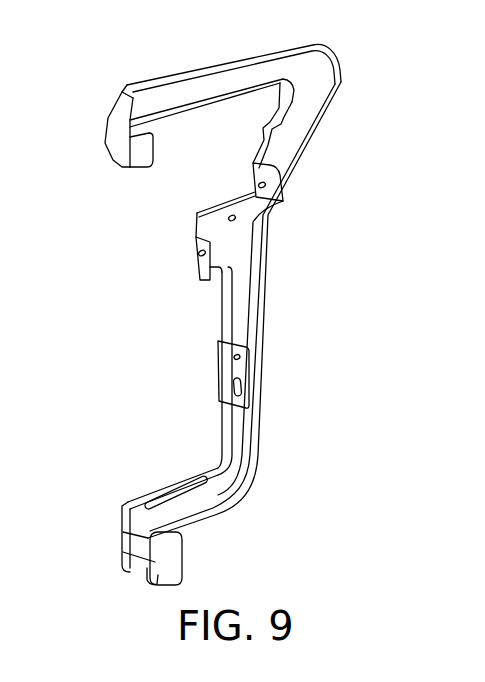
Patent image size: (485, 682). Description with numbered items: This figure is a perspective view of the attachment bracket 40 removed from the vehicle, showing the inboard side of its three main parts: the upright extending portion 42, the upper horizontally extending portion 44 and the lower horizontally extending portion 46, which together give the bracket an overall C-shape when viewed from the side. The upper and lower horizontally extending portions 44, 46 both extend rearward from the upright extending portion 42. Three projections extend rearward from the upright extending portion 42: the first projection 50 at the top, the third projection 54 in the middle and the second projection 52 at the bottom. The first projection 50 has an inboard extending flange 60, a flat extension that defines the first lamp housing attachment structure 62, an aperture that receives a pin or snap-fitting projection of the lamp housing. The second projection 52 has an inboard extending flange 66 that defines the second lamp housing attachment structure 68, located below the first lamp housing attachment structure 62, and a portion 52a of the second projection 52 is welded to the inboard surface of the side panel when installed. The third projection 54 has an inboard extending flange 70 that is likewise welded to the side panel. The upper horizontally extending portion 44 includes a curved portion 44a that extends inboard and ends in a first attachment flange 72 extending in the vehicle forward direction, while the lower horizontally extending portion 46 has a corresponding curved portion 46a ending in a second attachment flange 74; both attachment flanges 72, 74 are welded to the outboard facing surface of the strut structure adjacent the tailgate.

The attachment bracket 40 is at (150, 52).
The upright extending portion 42 is at (268, 290).
The upper horizontally extending portion 44 is at (230, 82).
The curved portion 44a is at (125, 100).
The lower horizontally extending portion 46 is at (165, 495).
The curved portion 46a is at (125, 503).
The first projection 50 is at (255, 160).
The second projection 52 is at (217, 348).
The portion of the second projection 52a is at (240, 360).
The third projection 54 is at (198, 222).
The inboard extending flange 60 is at (282, 202).
The first lamp housing attachment structure 62 is at (258, 184).
The inboard extending flange 66 is at (228, 368).
The second lamp housing attachment structure 68 is at (233, 385).
The inboard extending flange 70 is at (200, 265).
The first attachment flange 72 is at (137, 155).
The second attachment flange 74 is at (172, 560).